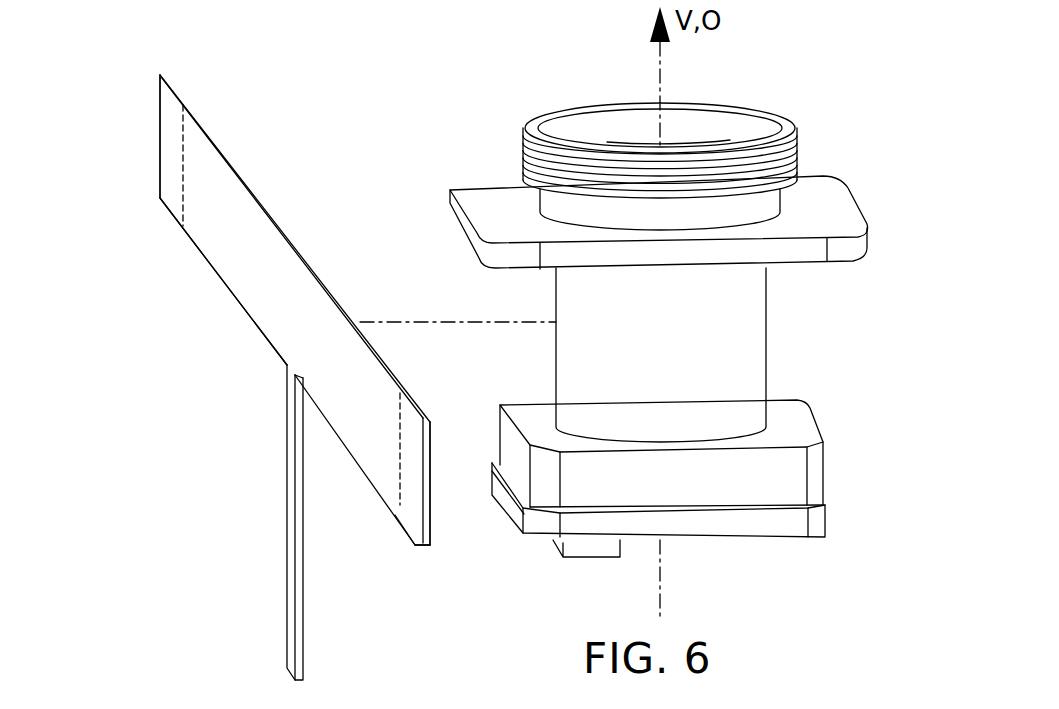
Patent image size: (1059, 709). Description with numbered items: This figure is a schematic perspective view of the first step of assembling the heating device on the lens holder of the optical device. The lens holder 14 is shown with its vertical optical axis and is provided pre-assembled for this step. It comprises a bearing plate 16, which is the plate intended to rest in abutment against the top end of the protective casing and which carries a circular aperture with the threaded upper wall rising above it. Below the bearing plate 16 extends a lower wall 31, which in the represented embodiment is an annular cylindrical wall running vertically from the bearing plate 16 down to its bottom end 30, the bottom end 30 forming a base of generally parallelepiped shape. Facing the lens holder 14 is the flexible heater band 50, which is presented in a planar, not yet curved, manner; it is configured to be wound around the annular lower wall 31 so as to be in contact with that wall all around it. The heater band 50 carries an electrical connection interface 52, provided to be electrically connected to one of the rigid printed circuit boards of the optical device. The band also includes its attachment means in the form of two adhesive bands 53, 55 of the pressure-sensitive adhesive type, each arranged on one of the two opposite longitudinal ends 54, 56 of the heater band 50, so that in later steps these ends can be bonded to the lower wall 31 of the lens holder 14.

The lens holder 14 is at (862, 68).
The bearing plate 16 is at (852, 198).
The bottom end 30 is at (845, 488).
The lower wall 31 is at (800, 336).
The heater band 50 is at (266, 358).
The electrical connection interface 52 is at (275, 476).
The adhesive band 53 is at (160, 72).
The longitudinal end 54 is at (440, 500).
The adhesive band 55 is at (417, 522).
The longitudinal end 56 is at (148, 155).